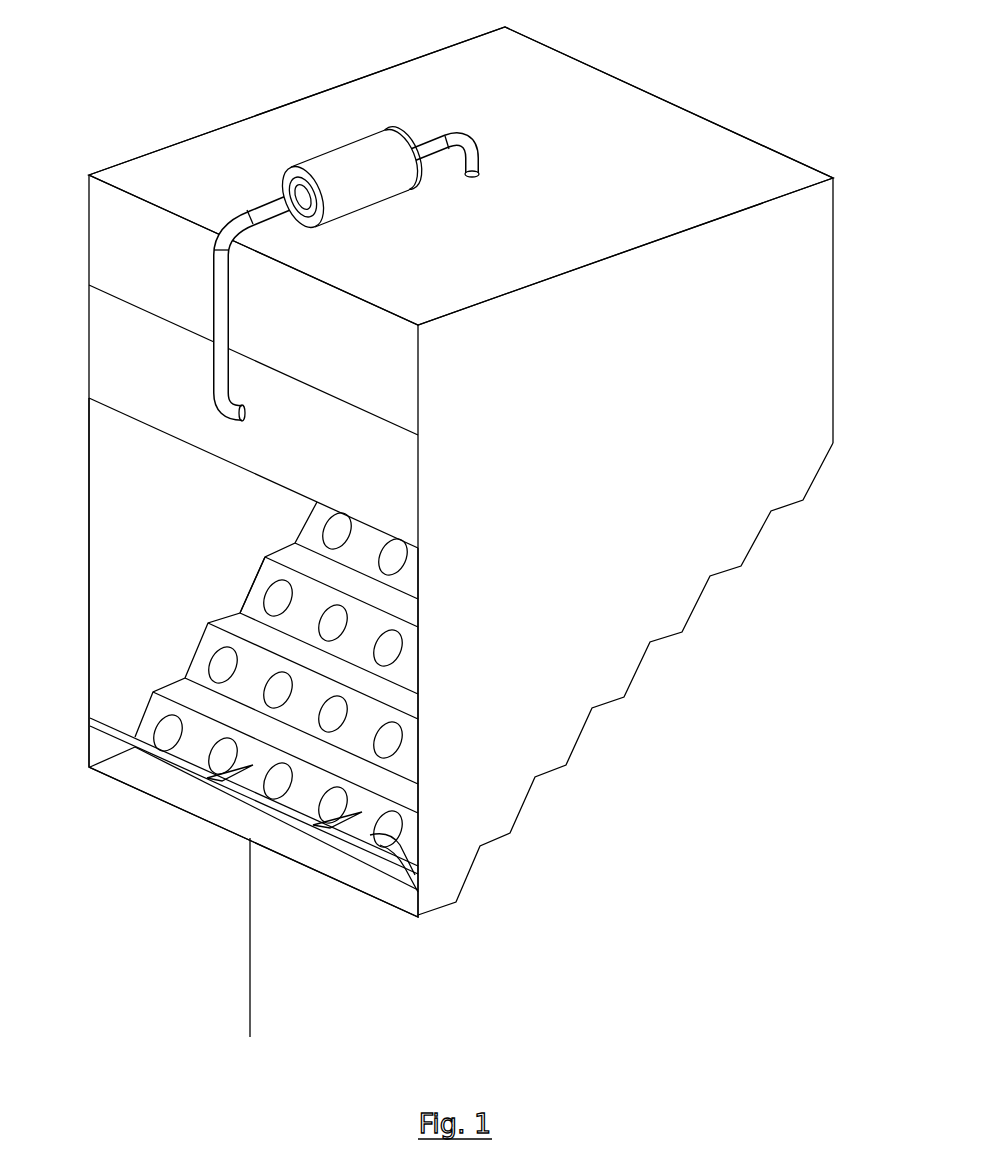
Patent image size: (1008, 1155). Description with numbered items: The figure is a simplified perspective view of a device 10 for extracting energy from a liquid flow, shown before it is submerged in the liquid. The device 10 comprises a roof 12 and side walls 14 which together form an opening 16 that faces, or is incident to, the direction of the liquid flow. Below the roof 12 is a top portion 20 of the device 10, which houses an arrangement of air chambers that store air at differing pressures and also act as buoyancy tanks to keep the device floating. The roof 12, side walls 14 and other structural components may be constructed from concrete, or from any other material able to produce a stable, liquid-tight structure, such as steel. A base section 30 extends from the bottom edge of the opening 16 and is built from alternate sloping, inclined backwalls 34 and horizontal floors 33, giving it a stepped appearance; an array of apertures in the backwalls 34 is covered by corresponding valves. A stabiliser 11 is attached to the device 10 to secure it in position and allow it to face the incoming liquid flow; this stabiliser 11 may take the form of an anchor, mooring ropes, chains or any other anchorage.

The device 10 is at (302, 60).
The stabiliser 11 is at (250, 1002).
The roof 12 is at (665, 125).
The side walls 14 is at (818, 318).
The opening 16 is at (113, 548).
The top portion 20 is at (110, 348).
The base section 30 is at (229, 697).
The horizontal floors 33 is at (290, 552).
The sloping backwalls 34 is at (250, 588).